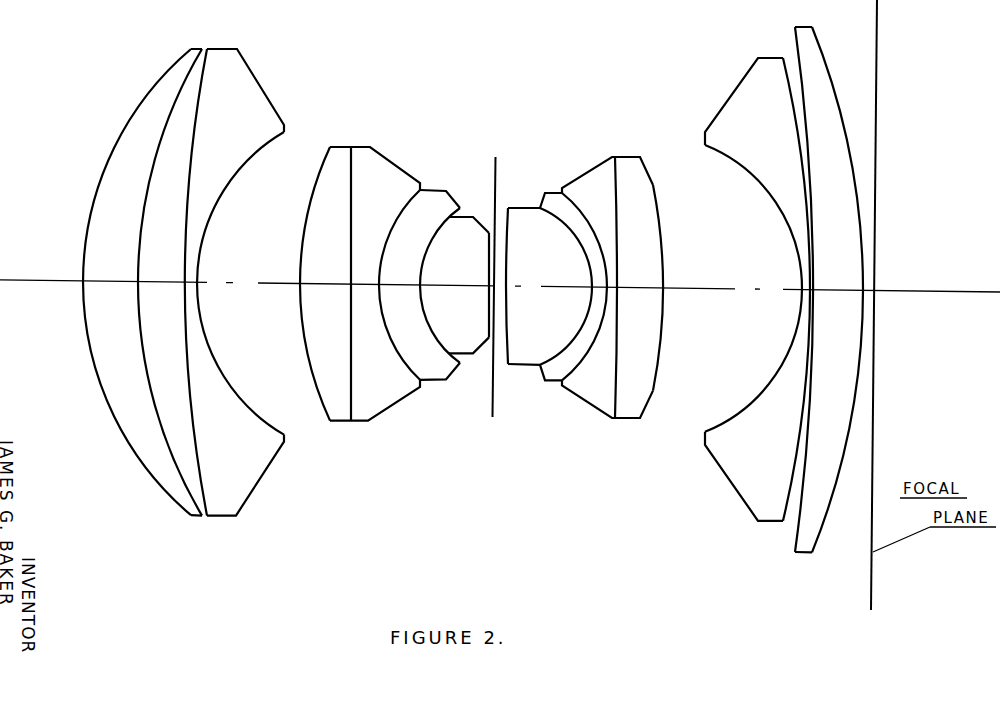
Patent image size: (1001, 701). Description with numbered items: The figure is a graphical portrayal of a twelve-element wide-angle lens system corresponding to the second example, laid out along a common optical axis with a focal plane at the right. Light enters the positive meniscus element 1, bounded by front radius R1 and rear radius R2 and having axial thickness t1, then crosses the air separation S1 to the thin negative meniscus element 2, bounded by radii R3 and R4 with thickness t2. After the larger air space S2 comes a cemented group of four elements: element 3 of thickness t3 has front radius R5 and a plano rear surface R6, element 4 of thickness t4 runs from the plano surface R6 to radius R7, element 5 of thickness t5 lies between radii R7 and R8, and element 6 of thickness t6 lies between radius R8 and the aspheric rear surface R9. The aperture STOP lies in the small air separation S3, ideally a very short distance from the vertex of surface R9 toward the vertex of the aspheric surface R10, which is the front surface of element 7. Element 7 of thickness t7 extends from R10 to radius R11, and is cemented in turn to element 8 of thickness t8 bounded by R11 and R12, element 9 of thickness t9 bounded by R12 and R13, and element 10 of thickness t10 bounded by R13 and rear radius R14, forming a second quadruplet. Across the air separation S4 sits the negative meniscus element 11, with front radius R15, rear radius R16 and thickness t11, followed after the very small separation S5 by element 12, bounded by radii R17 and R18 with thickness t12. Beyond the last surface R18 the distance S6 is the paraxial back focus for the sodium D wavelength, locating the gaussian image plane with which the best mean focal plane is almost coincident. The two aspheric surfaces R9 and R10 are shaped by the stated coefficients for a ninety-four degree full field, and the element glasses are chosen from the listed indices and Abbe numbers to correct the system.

The lens element I 1 is at (136, 316).
The lens element II 2 is at (234, 302).
The lens element III 3 is at (311, 321).
The lens element IV 4 is at (384, 306).
The lens element V 5 is at (416, 316).
The lens element VI 6 is at (458, 320).
The lens element VII 7 is at (545, 326).
The lens element VIII 8 is at (574, 330).
The lens element IX 9 is at (604, 327).
The lens element X 10 is at (651, 287).
The lens element XI 11 is at (750, 310).
The lens element XII 12 is at (829, 324).
The radius of curvature of first surface R1 is at (119, 427).
The radius of curvature of second surface R2 is at (157, 408).
The radius of curvature of third surface R3 is at (193, 453).
The radius of curvature of fourth surface R4 is at (245, 407).
The radius of curvature of fifth surface R5 is at (304, 340).
The plano sixth surface R6 is at (349, 368).
The radius of curvature of seventh surface R7 is at (388, 338).
The radius of curvature of eighth surface R8 is at (430, 328).
The aspheric ninth surface R9 is at (487, 317).
The aspheric tenth surface R10 is at (507, 366).
The radius of curvature of eleventh surface R11 is at (554, 357).
The radius of curvature of twelfth surface R12 is at (585, 358).
The radius of curvature of thirteenth surface R13 is at (618, 392).
The radius of curvature of fourteenth surface R14 is at (648, 392).
The radius of curvature of fifteenth surface R15 is at (733, 413).
The radius of curvature of sixteenth surface R16 is at (795, 450).
The radius of curvature of seventeenth surface R17 is at (795, 503).
The radius of curvature of eighteenth surface R18 is at (813, 545).
The axial separation between elements I and II S1 is at (112, 281).
The axial separation between elements II and III S2 is at (250, 283).
The axial separation between elements VI and VII S3 is at (497, 286).
The axial separation between elements X and XI S4 is at (702, 288).
The axial separation between elements XI and XII S5 is at (815, 290).
The paraxial back focus S6 is at (868, 290).
The axial thickness of element I t1 is at (162, 282).
The axial thickness of element II t2 is at (190, 282).
The axial thickness of element III t3 is at (325, 284).
The axial thickness of element IV t4 is at (365, 284).
The axial thickness of element V t5 is at (407, 285).
The axial thickness of element VI t6 is at (472, 286).
The axial thickness of element VII t7 is at (543, 286).
The axial thickness of element VIII t8 is at (600, 287).
The axial thickness of element IX t9 is at (618, 287).
The axial thickness of element X t10 is at (638, 288).
The axial thickness of element XI t11 is at (802, 290).
The axial thickness of element XII t12 is at (839, 290).
The stop STOP is at (492, 380).